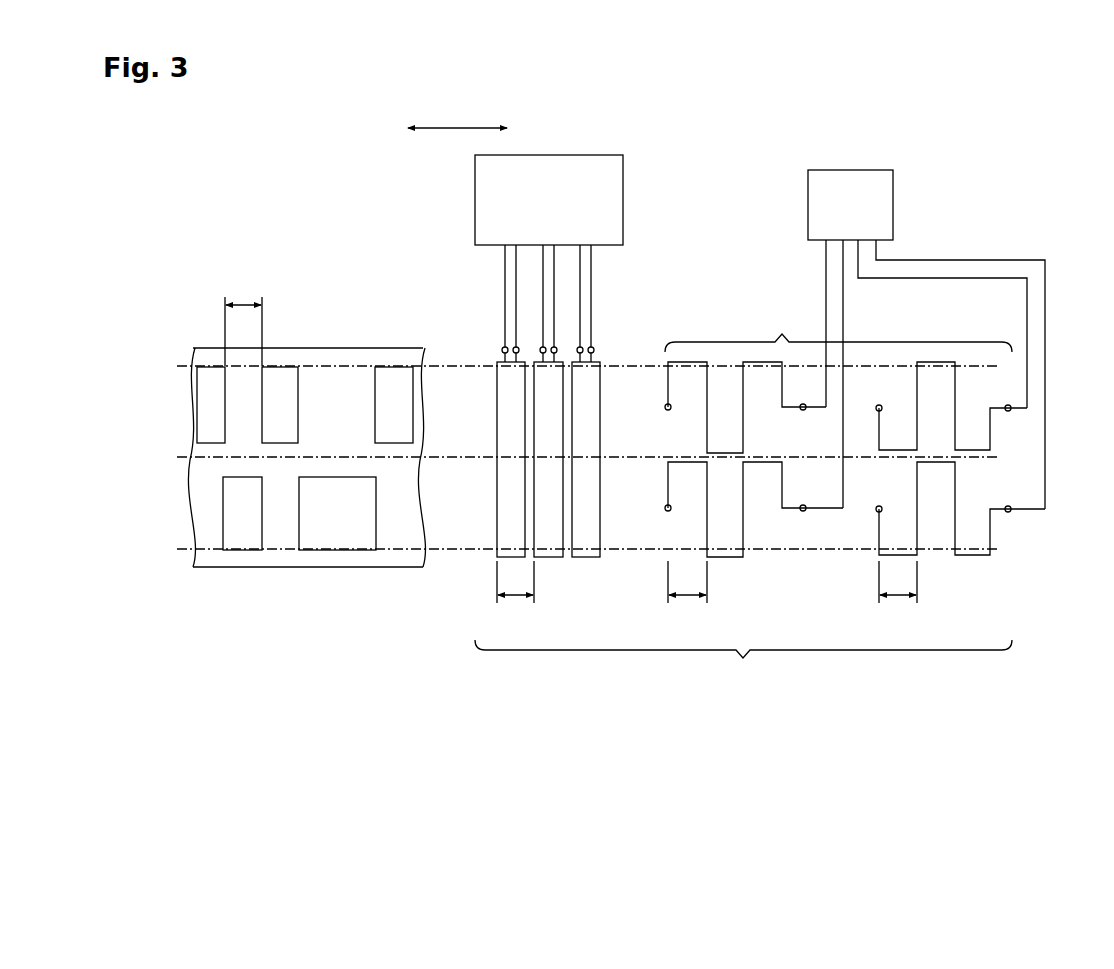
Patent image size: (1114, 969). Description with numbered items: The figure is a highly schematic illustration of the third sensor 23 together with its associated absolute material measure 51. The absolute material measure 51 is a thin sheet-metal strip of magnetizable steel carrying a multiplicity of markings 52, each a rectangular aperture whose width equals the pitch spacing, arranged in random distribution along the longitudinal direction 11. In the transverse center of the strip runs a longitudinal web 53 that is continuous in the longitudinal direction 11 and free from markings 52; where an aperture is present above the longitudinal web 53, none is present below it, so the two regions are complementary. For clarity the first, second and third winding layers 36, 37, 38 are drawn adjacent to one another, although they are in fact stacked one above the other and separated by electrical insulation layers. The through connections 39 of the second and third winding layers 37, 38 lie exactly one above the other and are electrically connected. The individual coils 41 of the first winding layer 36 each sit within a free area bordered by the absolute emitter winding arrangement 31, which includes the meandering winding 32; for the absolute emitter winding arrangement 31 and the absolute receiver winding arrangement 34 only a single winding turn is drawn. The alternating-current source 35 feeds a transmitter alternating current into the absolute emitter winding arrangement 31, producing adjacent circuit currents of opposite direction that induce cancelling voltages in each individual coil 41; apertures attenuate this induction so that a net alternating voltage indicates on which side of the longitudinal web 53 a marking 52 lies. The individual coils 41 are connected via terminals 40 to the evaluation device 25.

The longitudinal direction 11 is at (460, 126).
The third sensor 23 is at (743, 665).
The evaluation device 25 is at (600, 203).
The absolute emitter winding arrangement 31 is at (838, 329).
The meandering winding 32 is at (917, 520).
The absolute receiver winding arrangement 34 is at (645, 340).
The alternating-current source 35 is at (822, 205).
The first winding layer 36 is at (551, 503).
The second winding layer 37 is at (748, 578).
The third winding layer 38 is at (974, 578).
The through connection 39 is at (882, 509).
The terminal 40 is at (594, 349).
The individual coil 41 is at (574, 513).
The absolute material measure 51 is at (408, 558).
The marking 52 is at (283, 382).
The longitudinal web 53 is at (207, 468).